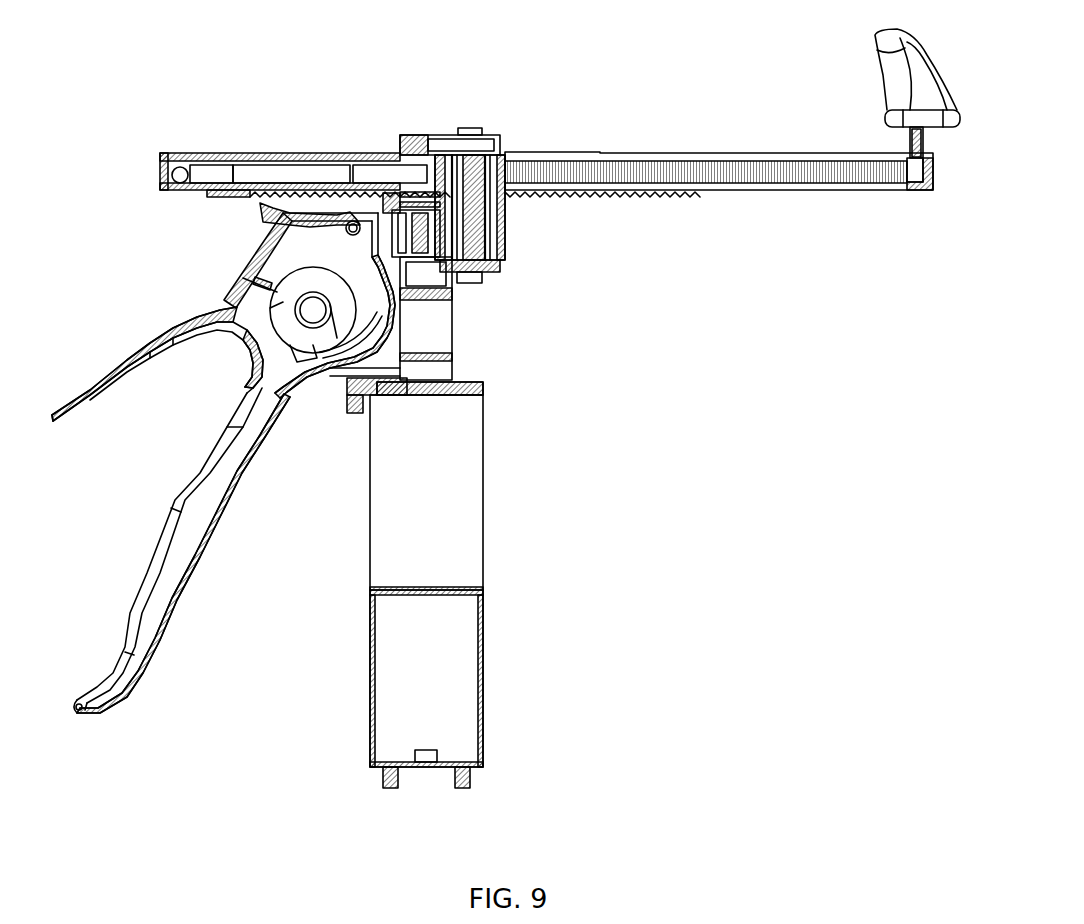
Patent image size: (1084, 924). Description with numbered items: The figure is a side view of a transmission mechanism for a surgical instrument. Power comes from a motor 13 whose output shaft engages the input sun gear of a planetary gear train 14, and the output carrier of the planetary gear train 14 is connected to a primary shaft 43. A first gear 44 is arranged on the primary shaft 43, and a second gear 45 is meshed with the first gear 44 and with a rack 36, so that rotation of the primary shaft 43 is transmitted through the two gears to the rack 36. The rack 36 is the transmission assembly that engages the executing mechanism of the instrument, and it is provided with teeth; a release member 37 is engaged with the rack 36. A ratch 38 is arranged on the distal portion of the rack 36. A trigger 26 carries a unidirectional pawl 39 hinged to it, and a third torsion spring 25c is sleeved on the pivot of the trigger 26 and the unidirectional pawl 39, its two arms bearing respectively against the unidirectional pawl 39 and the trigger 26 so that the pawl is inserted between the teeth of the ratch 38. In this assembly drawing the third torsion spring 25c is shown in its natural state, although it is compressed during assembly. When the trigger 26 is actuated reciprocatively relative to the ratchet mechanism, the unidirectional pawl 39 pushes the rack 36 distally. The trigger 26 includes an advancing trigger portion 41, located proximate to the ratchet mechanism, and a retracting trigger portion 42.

The motor 13 is at (462, 670).
The planetary gear train 14 is at (453, 473).
The third torsion spring 25c is at (313, 222).
The trigger 26 is at (232, 302).
The rack 36 is at (748, 182).
The release member 37 is at (897, 83).
The ratch 38 is at (327, 222).
The unidirectional pawl 39 is at (300, 223).
The advancing trigger portion 41 is at (183, 535).
The retracting trigger portion 42 is at (130, 380).
The primary shaft 43 is at (437, 327).
The first gear 44 is at (415, 237).
The second gear 45 is at (488, 217).